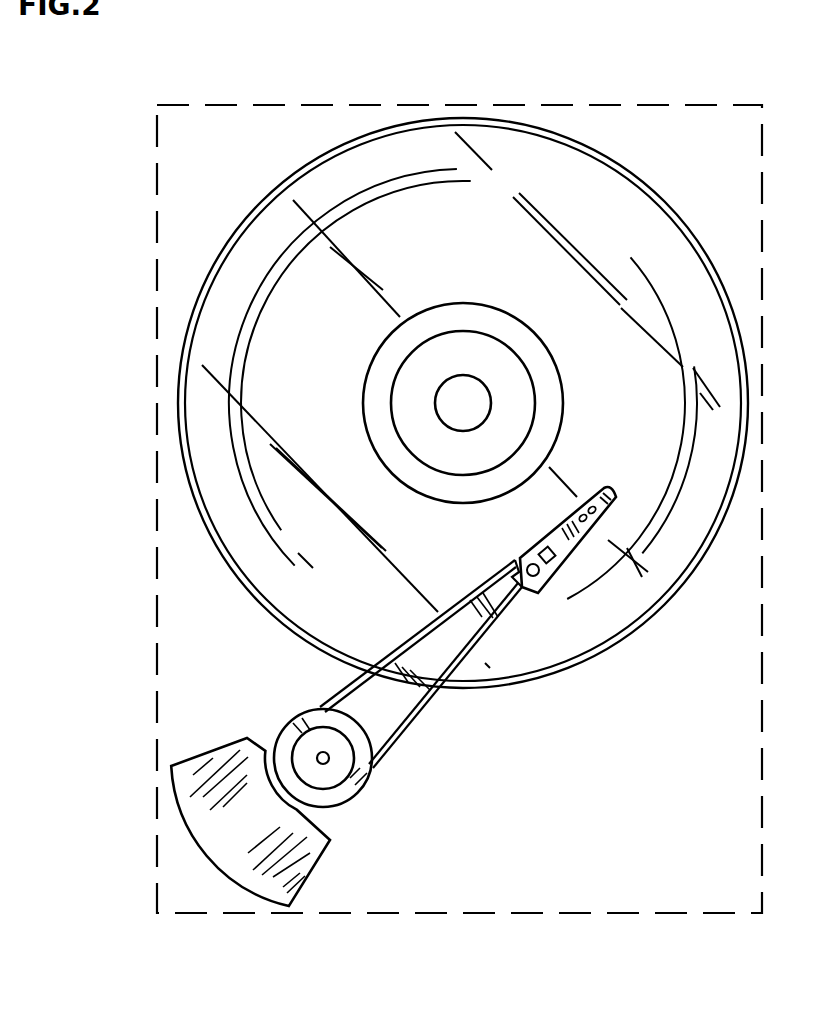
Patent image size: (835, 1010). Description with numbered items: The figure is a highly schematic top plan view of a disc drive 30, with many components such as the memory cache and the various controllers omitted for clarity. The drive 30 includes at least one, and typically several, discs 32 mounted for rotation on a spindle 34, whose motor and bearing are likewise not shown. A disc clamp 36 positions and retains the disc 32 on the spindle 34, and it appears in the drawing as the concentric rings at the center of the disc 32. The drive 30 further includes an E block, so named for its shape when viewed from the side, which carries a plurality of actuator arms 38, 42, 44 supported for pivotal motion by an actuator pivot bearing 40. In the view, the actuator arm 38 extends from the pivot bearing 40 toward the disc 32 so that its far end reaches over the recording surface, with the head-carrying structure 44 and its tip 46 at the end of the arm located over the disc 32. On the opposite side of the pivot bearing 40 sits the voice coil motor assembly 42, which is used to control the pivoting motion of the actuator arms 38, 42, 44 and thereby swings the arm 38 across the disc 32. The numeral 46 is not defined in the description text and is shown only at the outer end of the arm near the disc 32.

The disc drive 30 is at (268, 72).
The disc 32 is at (568, 172).
The spindle 34 is at (460, 405).
The disc clamp 36 is at (487, 353).
The actuator arm 38 is at (393, 722).
The actuator pivot bearing 40 is at (333, 770).
The voice coil motor assembly 42 is at (293, 887).
The actuator arm 44 is at (547, 578).
The read/write head 46 is at (620, 514).